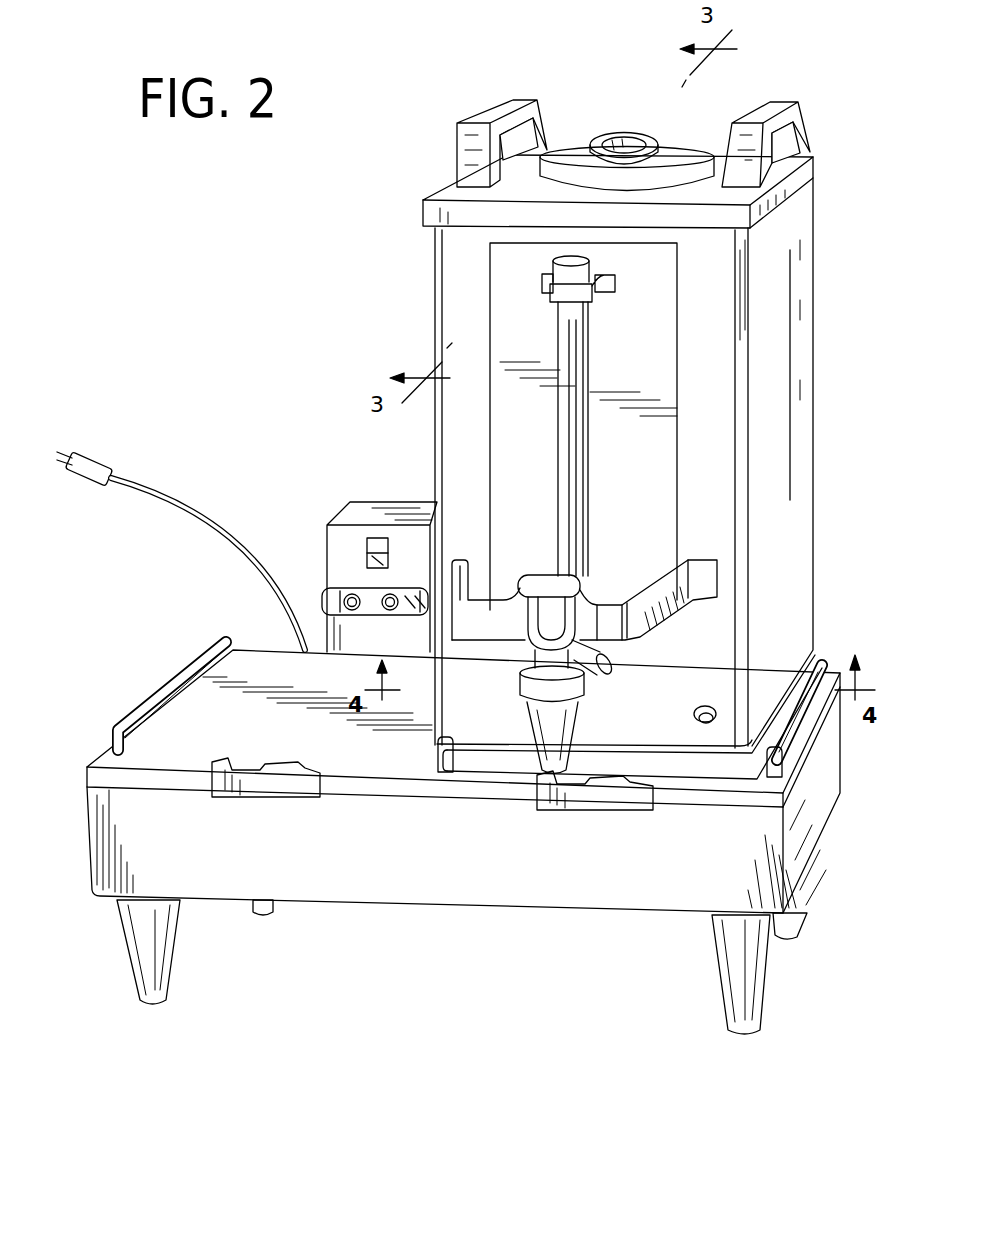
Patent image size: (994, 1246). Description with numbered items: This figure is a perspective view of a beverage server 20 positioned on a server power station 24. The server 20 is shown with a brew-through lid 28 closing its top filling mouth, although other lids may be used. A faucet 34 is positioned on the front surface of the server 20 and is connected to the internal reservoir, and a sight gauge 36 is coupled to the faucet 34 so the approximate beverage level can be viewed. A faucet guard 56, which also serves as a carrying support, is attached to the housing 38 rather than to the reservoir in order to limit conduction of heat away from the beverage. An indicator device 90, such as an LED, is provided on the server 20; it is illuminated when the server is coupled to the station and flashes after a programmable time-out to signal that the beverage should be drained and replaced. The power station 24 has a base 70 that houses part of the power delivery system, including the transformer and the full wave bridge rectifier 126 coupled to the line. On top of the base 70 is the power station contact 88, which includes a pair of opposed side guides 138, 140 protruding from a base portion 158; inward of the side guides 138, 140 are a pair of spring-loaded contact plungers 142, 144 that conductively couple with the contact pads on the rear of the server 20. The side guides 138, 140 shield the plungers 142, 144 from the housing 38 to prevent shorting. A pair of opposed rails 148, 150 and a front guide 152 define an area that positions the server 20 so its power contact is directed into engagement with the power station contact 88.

The beverage server 20 is at (636, 437).
The server power station 24 is at (477, 838).
The brew-through lid 28 is at (580, 143).
The faucet 34 is at (560, 730).
The sight gauge 36 is at (566, 447).
The housing 38 is at (783, 500).
The faucet guard 56 is at (625, 636).
The base 70 is at (522, 908).
The power station contact 88 is at (382, 573).
The indicator device 90 is at (708, 706).
The full wave bridge rectifier 126 is at (376, 538).
The side guide 138 is at (382, 613).
The side guide 140 is at (428, 604).
The spring-loaded contact plunger 142 is at (355, 610).
The spring-loaded contact plunger 144 is at (393, 608).
The rail 148 is at (438, 745).
The rail 150 is at (780, 753).
The front guide 152 is at (607, 802).
The base portion 158 is at (410, 575).